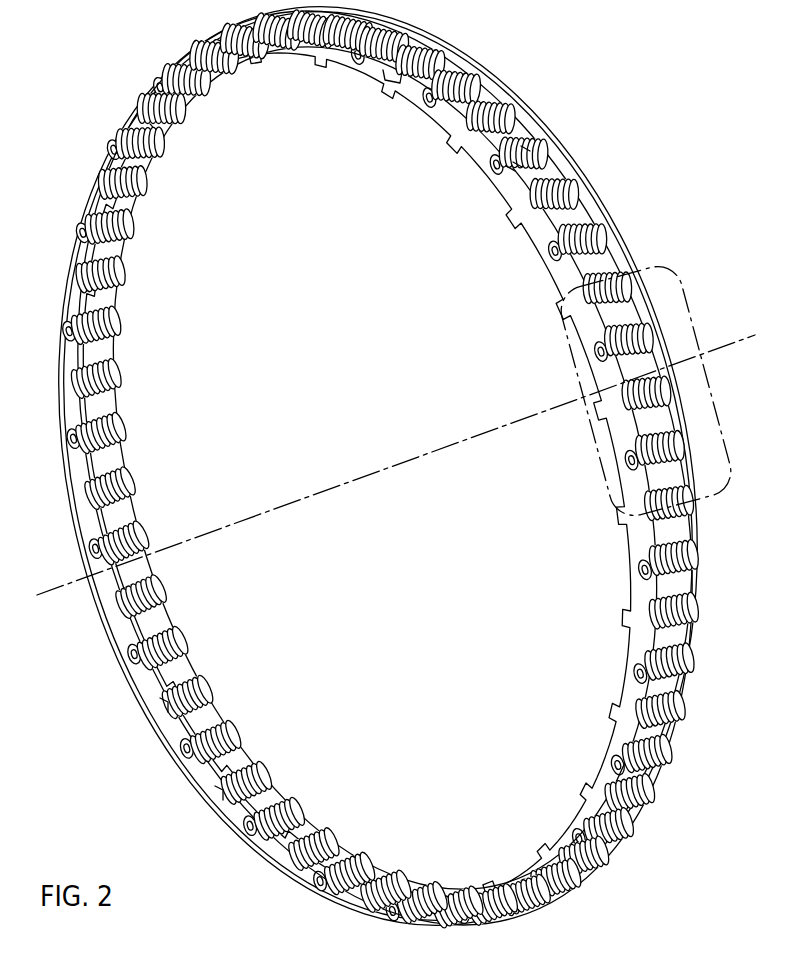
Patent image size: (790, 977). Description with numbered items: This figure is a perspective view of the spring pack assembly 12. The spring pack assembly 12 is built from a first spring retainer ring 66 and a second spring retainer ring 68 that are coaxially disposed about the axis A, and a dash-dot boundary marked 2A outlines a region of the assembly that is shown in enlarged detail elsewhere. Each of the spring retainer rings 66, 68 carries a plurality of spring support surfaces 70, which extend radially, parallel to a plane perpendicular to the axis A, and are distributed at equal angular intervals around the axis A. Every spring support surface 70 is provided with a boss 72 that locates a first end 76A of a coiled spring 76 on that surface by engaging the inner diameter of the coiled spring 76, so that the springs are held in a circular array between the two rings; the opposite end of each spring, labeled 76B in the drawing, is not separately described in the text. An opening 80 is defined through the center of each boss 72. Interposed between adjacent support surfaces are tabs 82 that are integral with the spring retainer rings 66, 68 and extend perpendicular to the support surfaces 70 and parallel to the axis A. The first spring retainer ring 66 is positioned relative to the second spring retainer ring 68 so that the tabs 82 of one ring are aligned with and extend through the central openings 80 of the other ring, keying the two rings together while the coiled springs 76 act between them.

The spring pack assembly 12 is at (395, 488).
The first spring retainer ring 66 is at (545, 243).
The second spring retainer ring 68 is at (582, 215).
The spring support surface 70 is at (484, 92).
The boss 72 is at (283, 50).
The coiled spring 76 is at (526, 150).
The first end 76A is at (510, 168).
The second spring end 76B is at (518, 164).
The opening 80 is at (394, 84).
The tab 82 is at (165, 705).
The axis A is at (290, 500).
The detail view boundary 2A is at (646, 391).